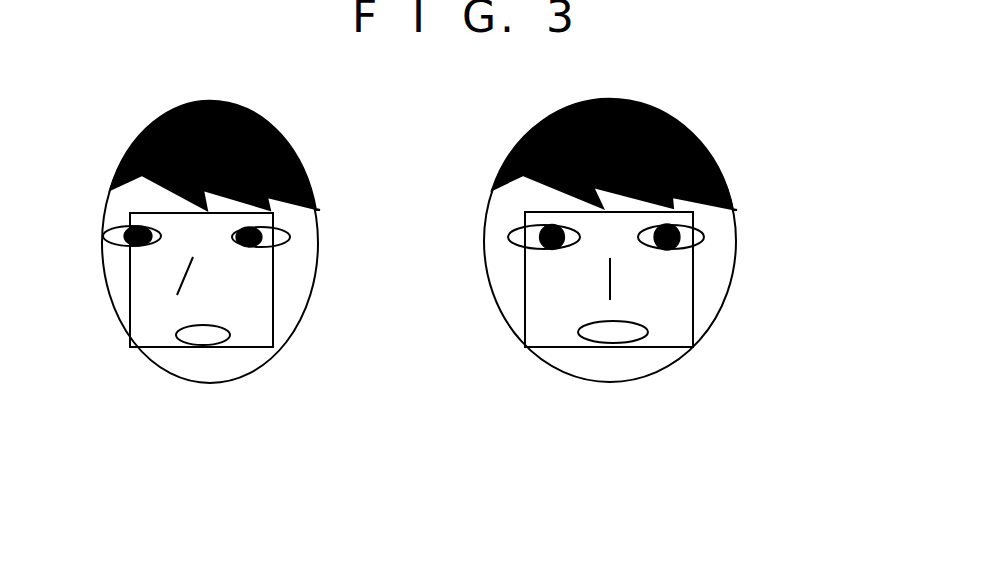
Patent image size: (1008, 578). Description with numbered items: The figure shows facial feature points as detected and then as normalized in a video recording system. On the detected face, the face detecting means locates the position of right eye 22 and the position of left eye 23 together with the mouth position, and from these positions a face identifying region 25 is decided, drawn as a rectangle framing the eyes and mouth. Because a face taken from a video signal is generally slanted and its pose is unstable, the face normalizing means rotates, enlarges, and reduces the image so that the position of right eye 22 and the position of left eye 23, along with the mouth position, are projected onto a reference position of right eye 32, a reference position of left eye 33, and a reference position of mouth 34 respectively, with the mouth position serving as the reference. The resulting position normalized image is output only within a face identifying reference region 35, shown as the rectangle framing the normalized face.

The position of right eye 22 is at (127, 242).
The position of left eye 23 is at (268, 228).
The face identifying region 25 is at (273, 327).
The reference position of right eye 32 is at (555, 250).
The reference position of left eye 33 is at (700, 235).
The reference position of mouth 34 is at (608, 337).
The face identifying reference region 35 is at (693, 292).